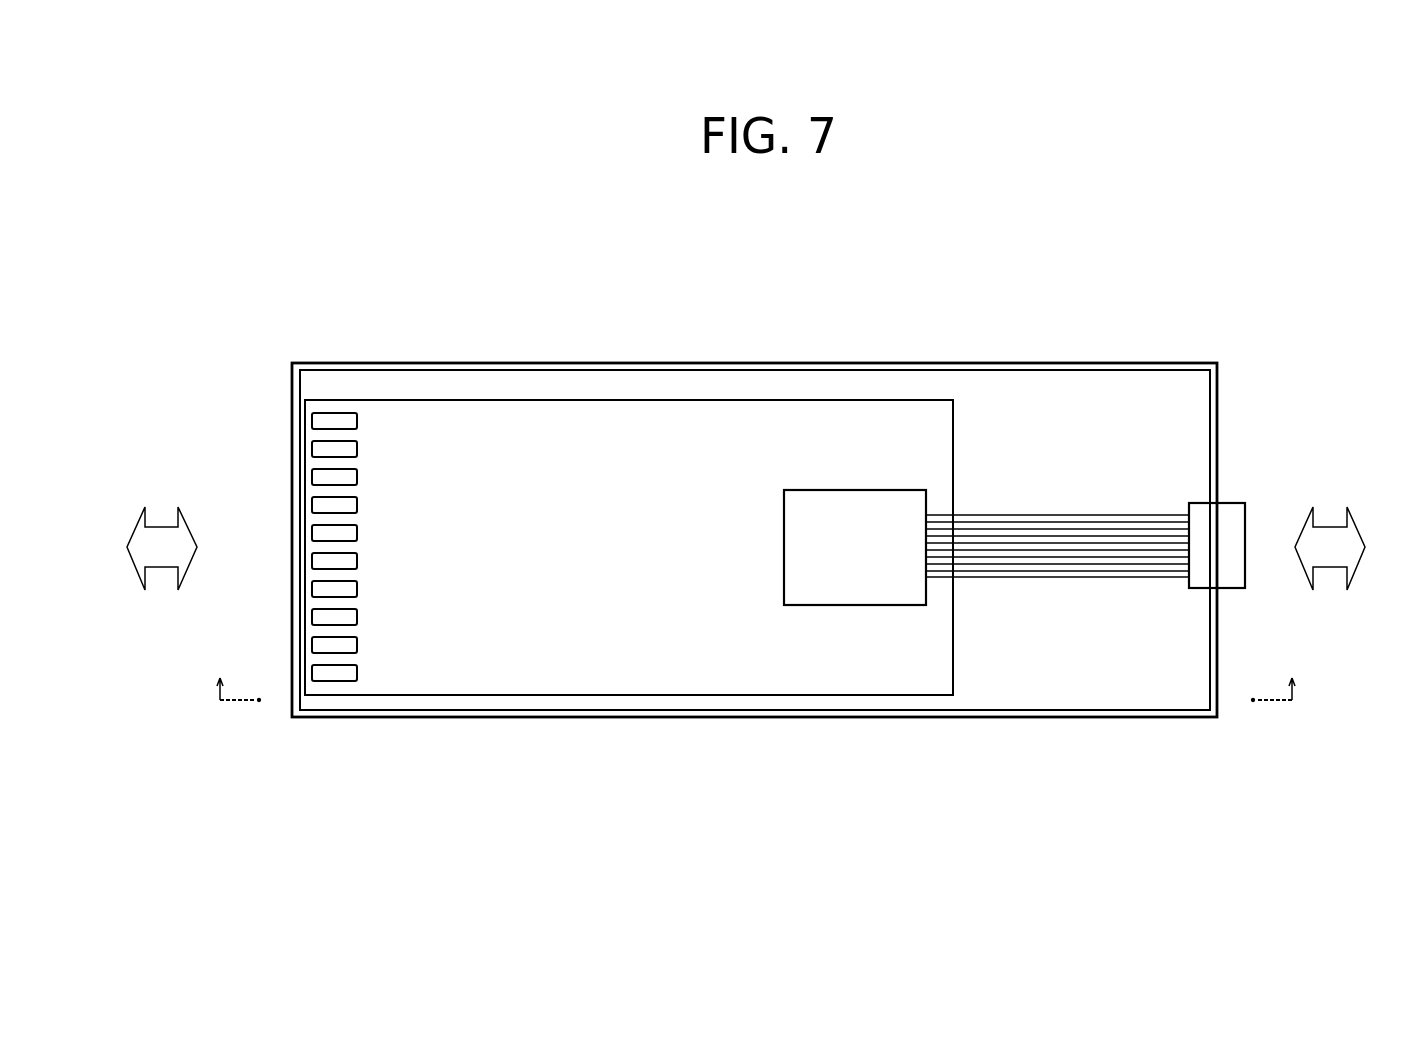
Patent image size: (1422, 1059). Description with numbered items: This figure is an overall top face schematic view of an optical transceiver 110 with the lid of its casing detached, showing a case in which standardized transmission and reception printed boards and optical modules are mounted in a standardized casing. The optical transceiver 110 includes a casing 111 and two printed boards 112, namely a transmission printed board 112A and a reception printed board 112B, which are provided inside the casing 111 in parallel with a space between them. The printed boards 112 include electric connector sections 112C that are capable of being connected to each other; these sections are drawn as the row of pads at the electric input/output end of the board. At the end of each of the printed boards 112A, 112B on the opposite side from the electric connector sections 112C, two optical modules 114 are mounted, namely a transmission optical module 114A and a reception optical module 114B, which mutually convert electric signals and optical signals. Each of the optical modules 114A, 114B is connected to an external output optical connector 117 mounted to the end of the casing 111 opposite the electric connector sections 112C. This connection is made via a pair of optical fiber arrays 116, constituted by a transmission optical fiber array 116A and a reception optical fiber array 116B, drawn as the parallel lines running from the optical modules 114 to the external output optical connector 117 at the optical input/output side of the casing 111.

The optical transceiver 110 is at (1176, 257).
The casing 111 is at (802, 362).
The printed boards 112 is at (650, 418).
The transmission printed board 112A is at (629, 547).
The reception printed board 112B is at (629, 547).
The electric connector sections 112C is at (380, 383).
The optical modules 114 is at (820, 585).
The transmission optical module 114A is at (855, 547).
The reception optical module 114B is at (855, 547).
The optical fiber arrays 116 is at (1050, 560).
The transmission optical fiber array 116A is at (1057, 546).
The reception optical fiber array 116B is at (1057, 546).
The external output optical connector 117 is at (1143, 578).